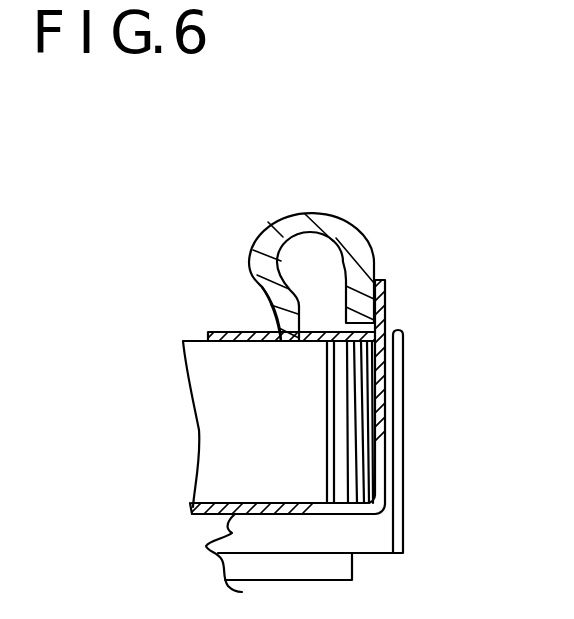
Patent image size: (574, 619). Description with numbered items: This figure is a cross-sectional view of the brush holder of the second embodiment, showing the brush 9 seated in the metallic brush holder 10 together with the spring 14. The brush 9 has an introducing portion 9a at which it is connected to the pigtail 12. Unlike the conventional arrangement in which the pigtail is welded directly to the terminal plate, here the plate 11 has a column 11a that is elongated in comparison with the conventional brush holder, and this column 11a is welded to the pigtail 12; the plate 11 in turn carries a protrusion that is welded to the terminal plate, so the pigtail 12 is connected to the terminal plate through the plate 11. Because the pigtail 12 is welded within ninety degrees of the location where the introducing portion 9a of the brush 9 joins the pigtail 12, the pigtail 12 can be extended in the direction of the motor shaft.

The brush 9 is at (243, 397).
The introducing portion 9a is at (262, 296).
The metallic brush holder 10 is at (243, 332).
The plate 11 is at (235, 516).
The column 11a is at (380, 302).
The pigtail 12 is at (302, 224).
The spring 14 is at (355, 424).